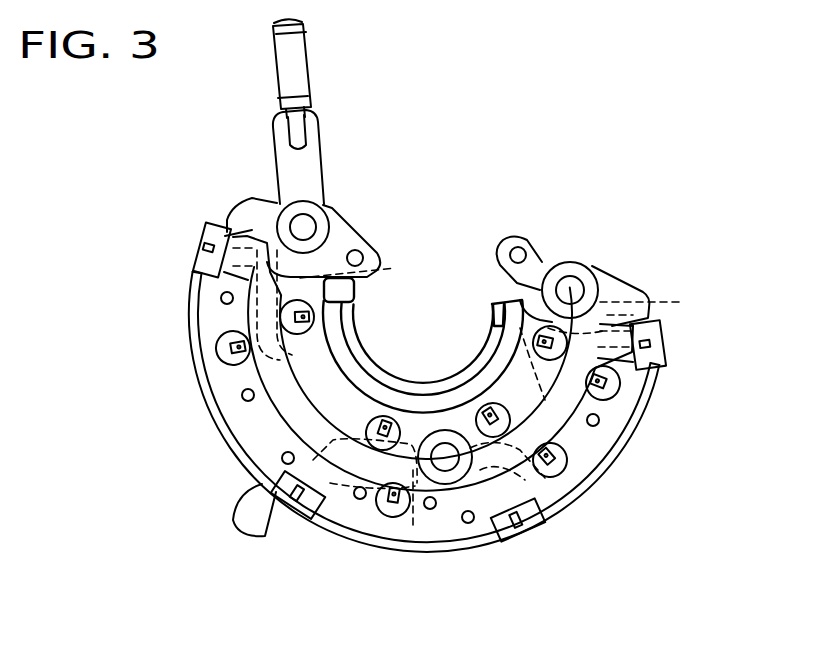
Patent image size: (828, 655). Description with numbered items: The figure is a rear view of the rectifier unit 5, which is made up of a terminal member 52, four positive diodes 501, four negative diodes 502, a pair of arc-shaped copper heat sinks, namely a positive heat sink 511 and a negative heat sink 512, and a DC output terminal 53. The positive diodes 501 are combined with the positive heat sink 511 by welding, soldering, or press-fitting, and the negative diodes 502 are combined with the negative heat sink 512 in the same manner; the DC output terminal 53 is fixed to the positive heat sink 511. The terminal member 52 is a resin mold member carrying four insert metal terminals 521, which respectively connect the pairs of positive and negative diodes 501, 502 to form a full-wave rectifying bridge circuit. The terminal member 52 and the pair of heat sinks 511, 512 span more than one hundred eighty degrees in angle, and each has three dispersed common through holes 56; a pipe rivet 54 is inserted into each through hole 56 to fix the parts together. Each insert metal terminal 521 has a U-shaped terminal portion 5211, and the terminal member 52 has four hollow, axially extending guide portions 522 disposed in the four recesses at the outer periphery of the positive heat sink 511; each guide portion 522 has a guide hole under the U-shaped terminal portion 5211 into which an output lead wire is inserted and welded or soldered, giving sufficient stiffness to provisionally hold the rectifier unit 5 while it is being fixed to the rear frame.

The rectifier unit 5 is at (481, 136).
The terminal member 52 is at (576, 392).
The DC output terminal 53 is at (300, 62).
The pipe rivet 54 is at (252, 199).
The common through hole 56 is at (305, 225).
The positive diode 501 is at (575, 385).
The negative diode 502 is at (505, 282).
The positive copper heat sink 511 is at (362, 545).
The negative copper heat sink 512 is at (397, 390).
The insert metal terminal 521 is at (372, 272).
The U-shaped terminal portion 5211 is at (200, 250).
The guide portion 522 is at (236, 520).